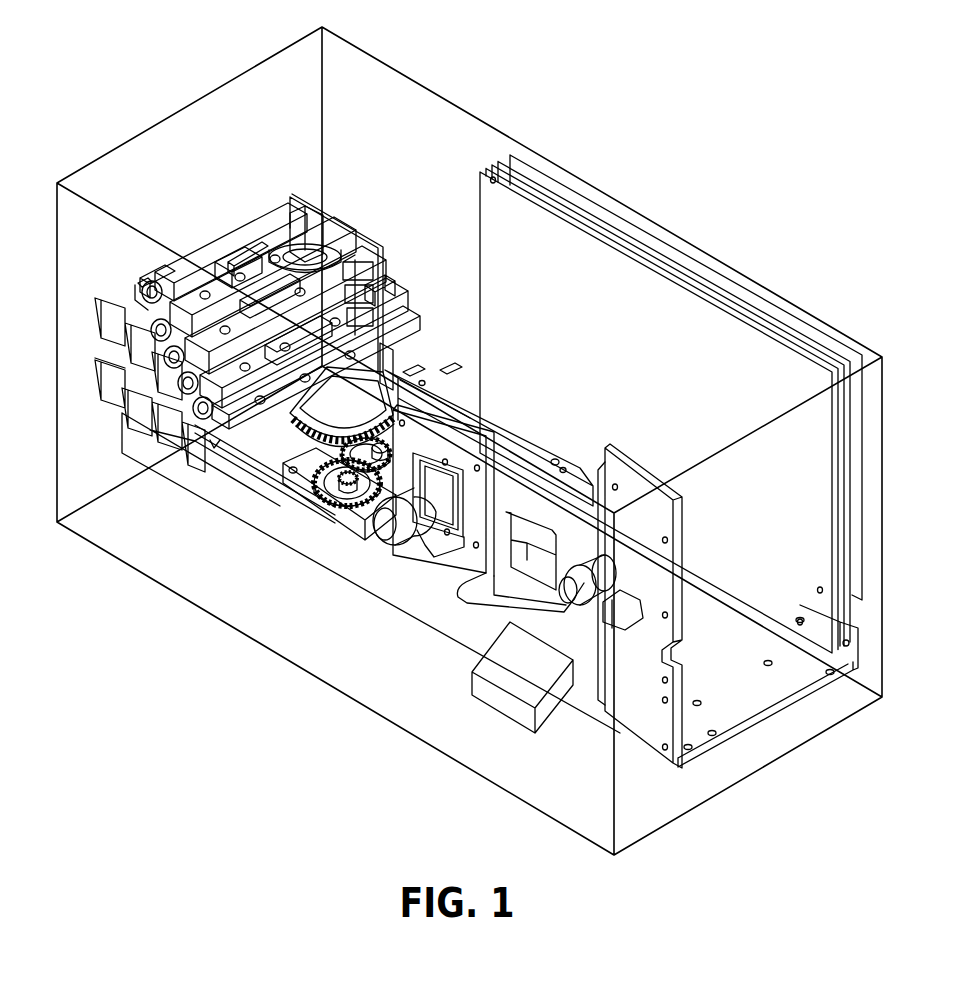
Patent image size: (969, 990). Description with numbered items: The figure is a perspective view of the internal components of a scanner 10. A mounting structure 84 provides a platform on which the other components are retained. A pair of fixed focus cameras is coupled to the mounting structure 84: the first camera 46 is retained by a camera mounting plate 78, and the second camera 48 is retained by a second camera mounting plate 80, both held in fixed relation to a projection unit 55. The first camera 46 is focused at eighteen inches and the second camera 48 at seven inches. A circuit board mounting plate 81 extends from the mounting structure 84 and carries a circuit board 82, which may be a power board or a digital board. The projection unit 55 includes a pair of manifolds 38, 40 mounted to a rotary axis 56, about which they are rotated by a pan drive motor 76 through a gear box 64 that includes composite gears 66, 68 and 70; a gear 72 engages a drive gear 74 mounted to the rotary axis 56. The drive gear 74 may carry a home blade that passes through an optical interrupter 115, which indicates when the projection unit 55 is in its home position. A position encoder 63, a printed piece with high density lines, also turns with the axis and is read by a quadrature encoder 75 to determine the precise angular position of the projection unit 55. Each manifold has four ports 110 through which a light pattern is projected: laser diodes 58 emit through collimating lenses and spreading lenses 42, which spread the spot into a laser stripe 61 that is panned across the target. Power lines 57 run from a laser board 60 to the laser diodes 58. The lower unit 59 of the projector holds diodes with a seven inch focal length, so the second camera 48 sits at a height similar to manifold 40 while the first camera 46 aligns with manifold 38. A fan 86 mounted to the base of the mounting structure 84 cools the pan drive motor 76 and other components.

The scanner 10 is at (181, 108).
The manifold 38 is at (160, 275).
The manifold 40 is at (185, 462).
The spreading lens 42 is at (118, 300).
The first camera 46 is at (592, 600).
The second camera 48 is at (407, 547).
The projection unit 55 is at (185, 243).
The rotary axis 56 is at (296, 225).
The power lines 57 is at (376, 290).
The laser diodes 58 is at (238, 262).
The lower unit 59 is at (112, 390).
The laser board 60 is at (345, 225).
The laser stripe 61 is at (120, 332).
The position encoder 63 is at (245, 512).
The gear box 64 is at (320, 505).
The composite gear 66 is at (352, 520).
The composite gear 68 is at (325, 498).
The composite gear 70 is at (480, 387).
The gear 72 is at (440, 392).
The drive gear 74 is at (412, 374).
The quadrature encoder 75 is at (296, 506).
The pan drive motor 76 is at (525, 442).
The camera mounting plate 78 is at (618, 482).
The second camera mounting plate 80 is at (510, 410).
The circuit board mounting plate 81 is at (822, 527).
The circuit board 82 is at (745, 292).
The mounting structure 84 is at (740, 698).
The fan 86 is at (490, 695).
The ports 110 is at (140, 283).
The optical interrupter 115 is at (452, 367).